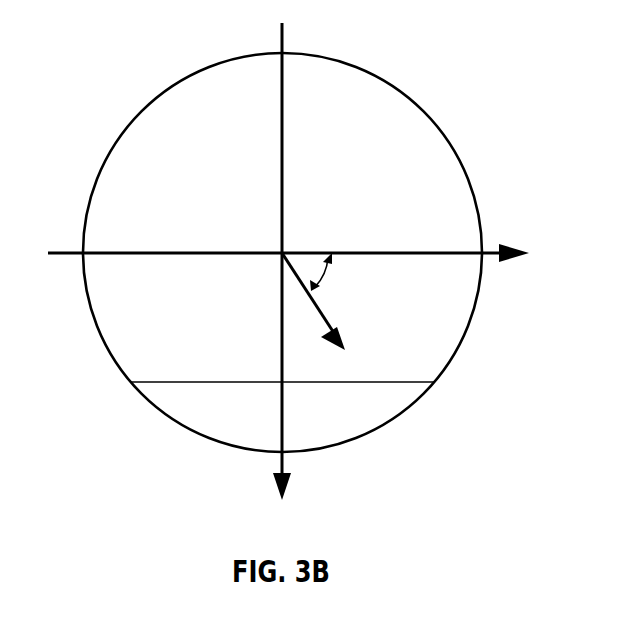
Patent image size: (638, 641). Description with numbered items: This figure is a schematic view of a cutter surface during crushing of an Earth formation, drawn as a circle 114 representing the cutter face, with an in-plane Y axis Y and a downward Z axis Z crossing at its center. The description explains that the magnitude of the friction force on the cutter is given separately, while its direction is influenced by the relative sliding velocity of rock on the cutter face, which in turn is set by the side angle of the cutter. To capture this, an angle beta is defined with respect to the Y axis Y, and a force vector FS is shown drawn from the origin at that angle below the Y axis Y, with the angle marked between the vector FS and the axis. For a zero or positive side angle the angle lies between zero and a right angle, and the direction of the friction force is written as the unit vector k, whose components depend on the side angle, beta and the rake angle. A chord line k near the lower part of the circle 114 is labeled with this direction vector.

The wheel / circular element 114 is at (158, 93).
The Y-axis Y is at (301, 257).
The Z axis Z is at (282, 280).
The direction of the friction force k is at (282, 329).
The side force vector FS is at (334, 310).